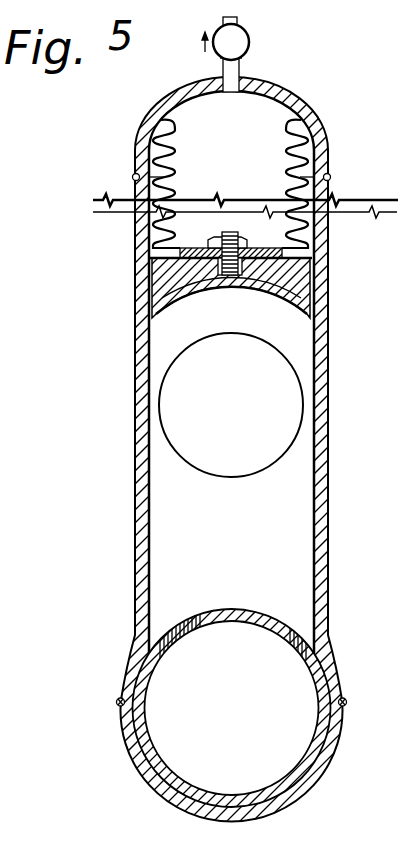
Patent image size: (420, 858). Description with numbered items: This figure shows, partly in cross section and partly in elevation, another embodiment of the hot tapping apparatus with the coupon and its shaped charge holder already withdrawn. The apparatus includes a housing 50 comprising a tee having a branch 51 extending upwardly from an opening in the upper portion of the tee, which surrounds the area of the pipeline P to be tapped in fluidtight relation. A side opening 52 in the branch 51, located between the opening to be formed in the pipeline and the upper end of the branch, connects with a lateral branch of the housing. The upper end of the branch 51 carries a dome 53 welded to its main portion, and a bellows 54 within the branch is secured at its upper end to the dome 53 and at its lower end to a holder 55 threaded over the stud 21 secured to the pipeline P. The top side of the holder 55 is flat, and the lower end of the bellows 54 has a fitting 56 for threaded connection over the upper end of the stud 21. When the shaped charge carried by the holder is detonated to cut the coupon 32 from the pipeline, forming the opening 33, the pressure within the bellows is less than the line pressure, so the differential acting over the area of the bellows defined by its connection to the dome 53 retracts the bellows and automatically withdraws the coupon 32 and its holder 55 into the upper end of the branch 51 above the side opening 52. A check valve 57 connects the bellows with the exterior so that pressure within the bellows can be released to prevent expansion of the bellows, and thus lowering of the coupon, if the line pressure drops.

The threaded stud 21 is at (231, 232).
The coupon 32 is at (203, 288).
The opening 33 is at (293, 638).
The housing 50 is at (329, 457).
The branch 51 is at (330, 520).
The side opening 52 is at (291, 368).
The dome 53 is at (329, 114).
The bellows 54 is at (302, 178).
The holder 55 is at (293, 276).
The fitting 56 is at (272, 233).
The check valve 57 is at (250, 43).
The pipeline P is at (300, 760).